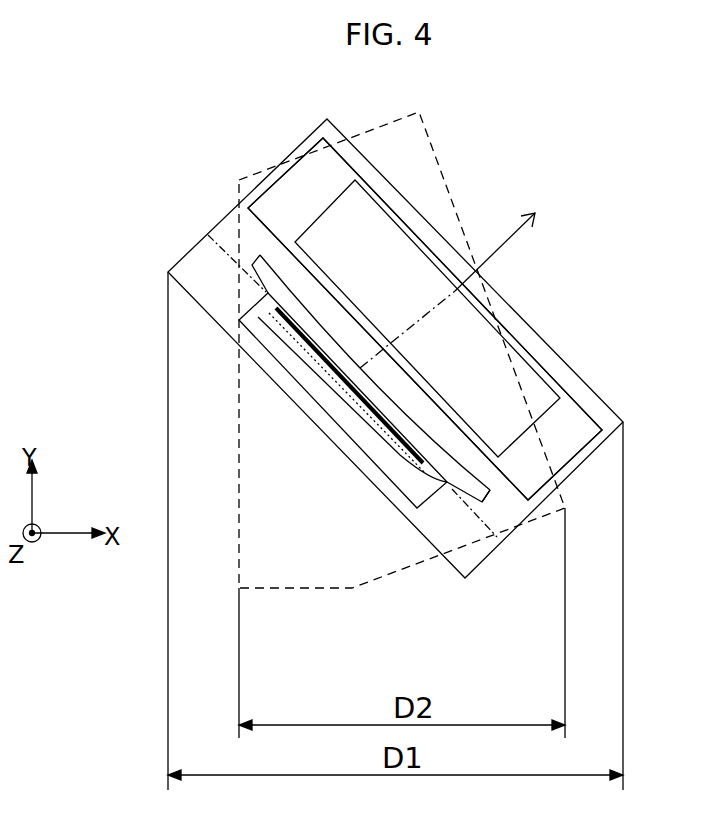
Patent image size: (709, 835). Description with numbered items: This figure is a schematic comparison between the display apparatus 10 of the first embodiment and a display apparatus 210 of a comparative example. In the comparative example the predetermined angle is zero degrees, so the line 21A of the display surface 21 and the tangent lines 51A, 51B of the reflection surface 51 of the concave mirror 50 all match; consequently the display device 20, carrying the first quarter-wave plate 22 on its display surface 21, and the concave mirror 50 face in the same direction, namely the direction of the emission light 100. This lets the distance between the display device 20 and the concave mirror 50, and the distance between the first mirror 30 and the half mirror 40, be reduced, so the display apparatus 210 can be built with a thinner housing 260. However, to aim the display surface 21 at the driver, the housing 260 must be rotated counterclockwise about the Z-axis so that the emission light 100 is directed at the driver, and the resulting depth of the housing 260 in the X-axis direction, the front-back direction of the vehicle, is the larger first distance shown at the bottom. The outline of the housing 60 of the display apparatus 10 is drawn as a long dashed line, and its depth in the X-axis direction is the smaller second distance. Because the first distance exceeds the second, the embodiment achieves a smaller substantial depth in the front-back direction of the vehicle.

The housing 260 is at (297, 148).
The half mirror 40 is at (340, 176).
The first mirror 30 is at (487, 343).
The housing 60 is at (438, 153).
The display apparatus 10 is at (402, 343).
The display apparatus 210 is at (186, 323).
The emission light 100 is at (512, 242).
The display device 20 is at (252, 312).
The display surface 21 is at (327, 360).
The first λ/4 plate 22 is at (398, 405).
The concave mirror 50 is at (470, 480).
The reflection surface 51 is at (470, 480).
The line 21A is at (439, 567).
The tangent line 51A is at (439, 567).
The tangent line 51B is at (483, 527).